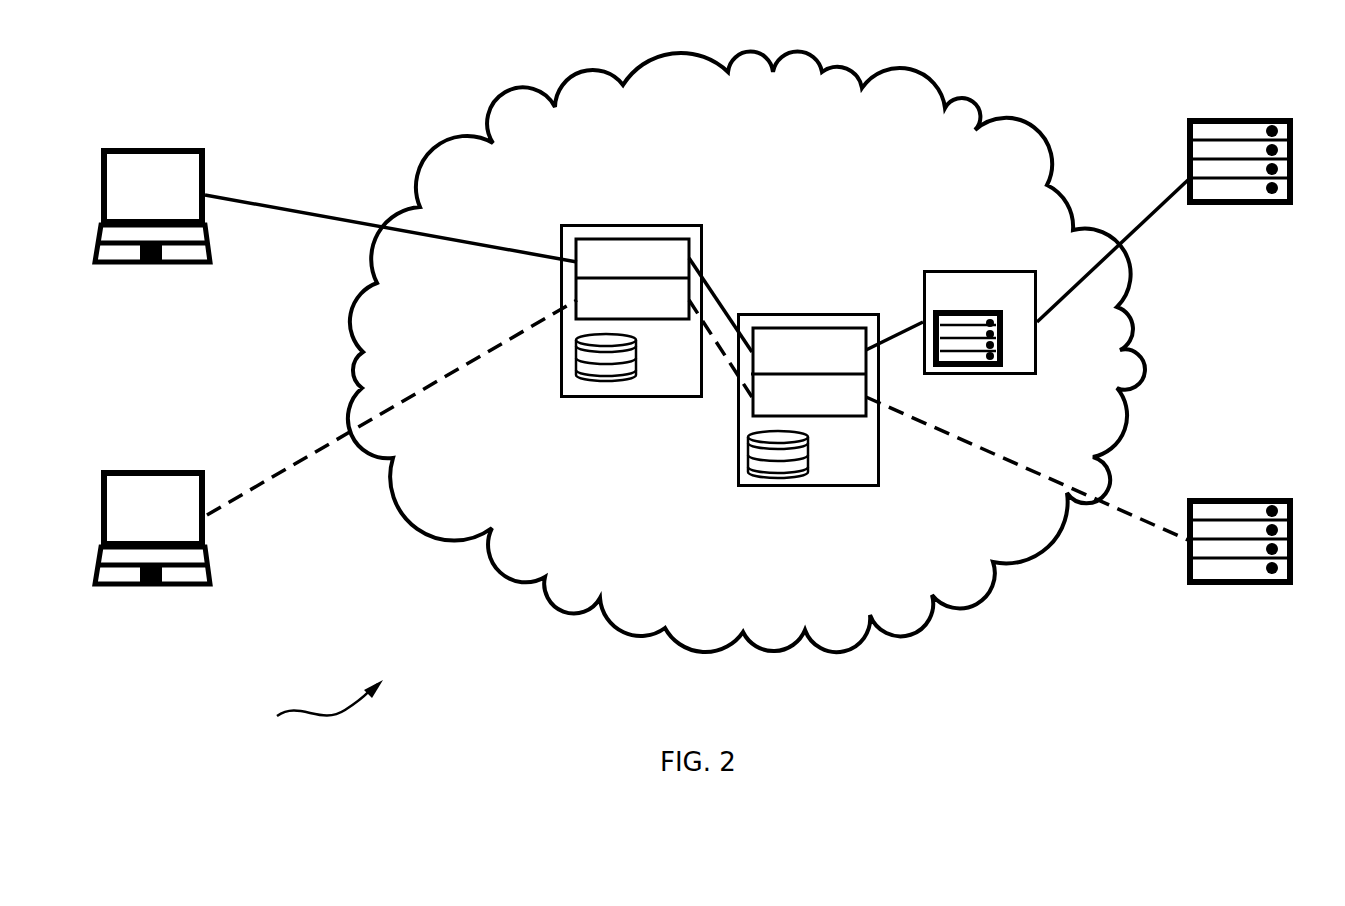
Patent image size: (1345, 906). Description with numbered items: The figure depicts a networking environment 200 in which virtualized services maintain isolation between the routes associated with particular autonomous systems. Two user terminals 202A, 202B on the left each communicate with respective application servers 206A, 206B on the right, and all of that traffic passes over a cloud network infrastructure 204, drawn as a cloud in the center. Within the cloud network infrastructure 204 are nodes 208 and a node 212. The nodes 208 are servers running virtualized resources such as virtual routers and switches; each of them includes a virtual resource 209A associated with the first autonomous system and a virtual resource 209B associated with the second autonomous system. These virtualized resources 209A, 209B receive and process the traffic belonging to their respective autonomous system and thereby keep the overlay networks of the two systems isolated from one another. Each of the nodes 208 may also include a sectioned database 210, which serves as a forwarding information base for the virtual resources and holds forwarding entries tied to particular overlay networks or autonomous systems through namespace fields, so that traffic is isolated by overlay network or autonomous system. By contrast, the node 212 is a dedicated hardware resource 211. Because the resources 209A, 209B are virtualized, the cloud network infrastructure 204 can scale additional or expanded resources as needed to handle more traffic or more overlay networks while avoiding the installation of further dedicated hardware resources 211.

The networking environment 200 is at (305, 703).
The user terminal 202A is at (205, 150).
The user terminal 202B is at (205, 472).
The cloud network infrastructure 204 is at (766, 132).
The application server 206A is at (1293, 122).
The application server 206B is at (1293, 500).
The node 208 is at (697, 389).
The virtual resource 209A is at (859, 370).
The virtual resource 209B is at (859, 410).
The sectioned database 210 is at (575, 380).
The dedicated hardware resource 211 is at (978, 372).
The node 212 is at (1028, 305).